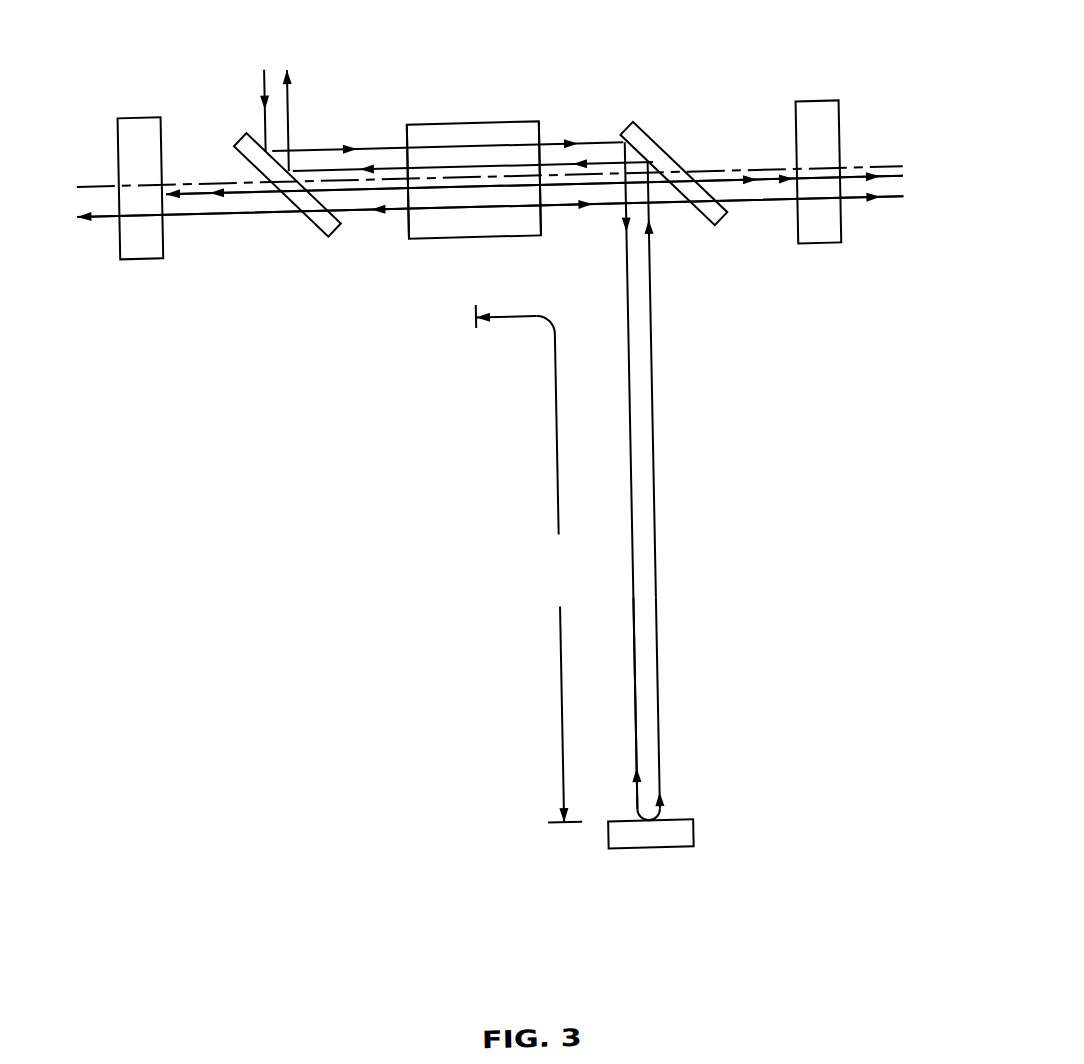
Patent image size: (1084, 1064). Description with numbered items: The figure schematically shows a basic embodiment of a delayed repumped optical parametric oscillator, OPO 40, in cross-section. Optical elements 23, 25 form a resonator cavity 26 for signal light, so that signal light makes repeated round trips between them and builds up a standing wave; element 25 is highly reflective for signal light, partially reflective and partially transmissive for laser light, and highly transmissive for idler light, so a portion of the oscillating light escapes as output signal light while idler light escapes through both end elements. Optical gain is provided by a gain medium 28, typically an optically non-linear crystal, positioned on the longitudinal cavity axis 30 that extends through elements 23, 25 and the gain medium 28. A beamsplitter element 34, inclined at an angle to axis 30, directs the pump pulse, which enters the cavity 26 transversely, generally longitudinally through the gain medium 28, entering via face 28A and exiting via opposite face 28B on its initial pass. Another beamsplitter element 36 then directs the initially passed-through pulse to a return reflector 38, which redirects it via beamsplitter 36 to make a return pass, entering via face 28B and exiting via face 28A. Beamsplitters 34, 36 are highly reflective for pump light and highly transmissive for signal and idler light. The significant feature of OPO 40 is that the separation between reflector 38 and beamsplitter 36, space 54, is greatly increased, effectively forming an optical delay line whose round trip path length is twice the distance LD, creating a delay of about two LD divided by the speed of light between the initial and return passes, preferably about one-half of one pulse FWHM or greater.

The optical element 23 is at (145, 108).
The optical element 25 is at (825, 107).
The resonator cavity 26 is at (329, 142).
The gain medium 28 is at (499, 132).
The face of gain medium 28A is at (415, 130).
The opposite face of gain medium 28B is at (549, 128).
The longitudinal cavity axis 30 is at (869, 175).
The beamsplitter element 34 is at (323, 214).
The beamsplitter element 36 is at (707, 221).
The return reflector 38 is at (645, 851).
The OPO 40 is at (320, 522).
The space 54 is at (622, 490).